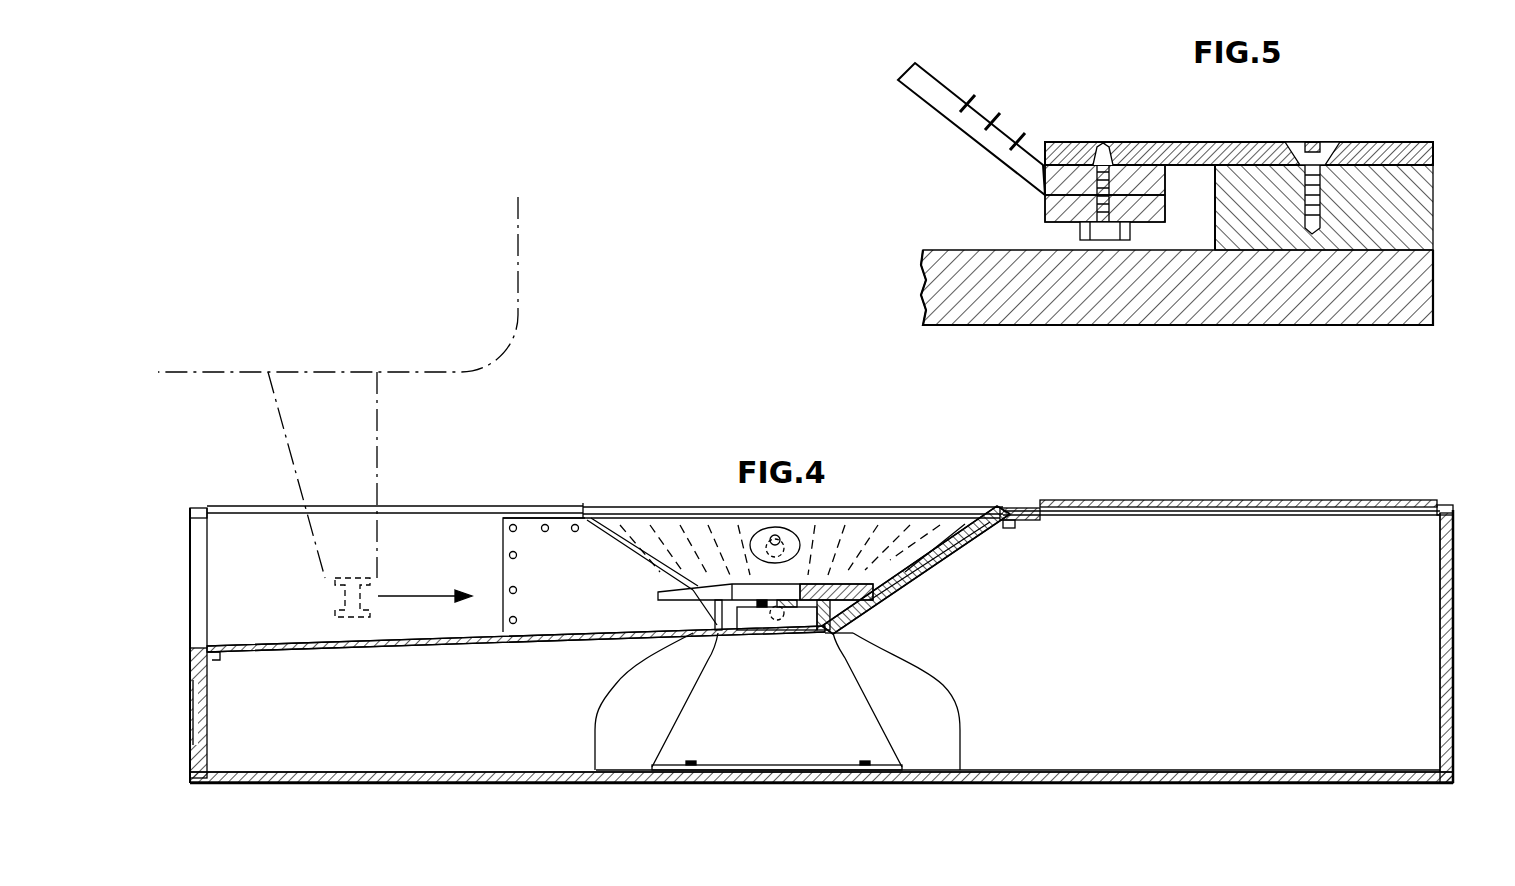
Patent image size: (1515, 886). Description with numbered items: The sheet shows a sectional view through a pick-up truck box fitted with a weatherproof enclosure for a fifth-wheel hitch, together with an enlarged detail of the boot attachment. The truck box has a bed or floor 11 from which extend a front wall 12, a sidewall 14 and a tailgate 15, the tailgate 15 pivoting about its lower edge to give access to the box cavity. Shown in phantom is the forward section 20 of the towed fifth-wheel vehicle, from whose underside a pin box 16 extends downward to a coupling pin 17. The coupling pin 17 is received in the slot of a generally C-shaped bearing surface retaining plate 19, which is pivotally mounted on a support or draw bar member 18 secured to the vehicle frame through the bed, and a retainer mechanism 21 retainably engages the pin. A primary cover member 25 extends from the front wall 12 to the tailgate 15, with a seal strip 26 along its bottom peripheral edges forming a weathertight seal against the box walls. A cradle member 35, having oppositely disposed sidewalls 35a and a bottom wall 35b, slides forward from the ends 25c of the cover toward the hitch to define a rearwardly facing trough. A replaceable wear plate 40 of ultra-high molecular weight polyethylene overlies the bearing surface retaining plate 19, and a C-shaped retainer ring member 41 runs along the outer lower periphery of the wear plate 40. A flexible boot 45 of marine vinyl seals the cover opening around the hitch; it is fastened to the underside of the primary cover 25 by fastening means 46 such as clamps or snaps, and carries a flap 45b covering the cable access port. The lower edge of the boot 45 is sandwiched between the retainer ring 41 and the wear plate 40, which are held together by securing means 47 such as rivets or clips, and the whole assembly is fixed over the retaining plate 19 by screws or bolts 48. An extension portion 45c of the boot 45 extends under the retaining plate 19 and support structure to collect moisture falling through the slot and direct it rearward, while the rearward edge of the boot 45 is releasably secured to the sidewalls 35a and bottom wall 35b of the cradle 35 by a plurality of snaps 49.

In FIG. 4, the bed or floor 11 is at (505, 784).
In FIG. 4, the front wall 12 is at (1453, 676).
In FIG. 4, the sidewall 14 is at (1245, 757).
In FIG. 4, the tailgate 15 is at (192, 703).
In FIG. 4, the pin box 16 is at (378, 462).
In FIG. 4, the coupling pin 17 is at (350, 598).
In FIG. 5, the support or draw bar member 18 is at (1420, 291).
In FIG. 4, the support or draw bar member 18 is at (820, 626).
In FIG. 5, the bearing surface retaining plate 19 is at (1420, 208).
In FIG. 4, the bearing surface retaining plate 19 is at (692, 597).
In FIG. 4, the forward section of fifth-wheel vehicle 20 is at (520, 292).
In FIG. 4, the retainer mechanism 21 is at (752, 626).
In FIG. 4, the primary cover member 25 is at (1440, 506).
In FIG. 4, the ends of the cover 25c is at (222, 660).
In FIG. 4, the seal strip 26 is at (1453, 512).
In FIG. 4, the cradle member 35 is at (240, 522).
In FIG. 4, the cradle sidewall 35a is at (420, 518).
In FIG. 4, the cradle bottom wall 35b is at (400, 650).
In FIG. 5, the wear plate 40 is at (1398, 143).
In FIG. 4, the wear plate 40 is at (793, 583).
In FIG. 5, the C-shaped retainer ring member 41 is at (1050, 208).
In FIG. 4, the C-shaped retainer ring member 41 is at (878, 589).
In FIG. 5, the boot 45 is at (973, 122).
In FIG. 4, the boot 45 is at (930, 528).
In FIG. 4, the flap 45b is at (758, 533).
In FIG. 4, the boot extension portion 45c is at (776, 636).
In FIG. 4, the fastening means 46 is at (1012, 528).
In FIG. 5, the securing means 47 is at (1085, 230).
In FIG. 4, the securing means 47 is at (880, 602).
In FIG. 5, the screws or bolts 48 is at (1320, 147).
In FIG. 4, the screws or bolts 48 is at (832, 584).
In FIG. 4, the snaps 49 is at (509, 553).